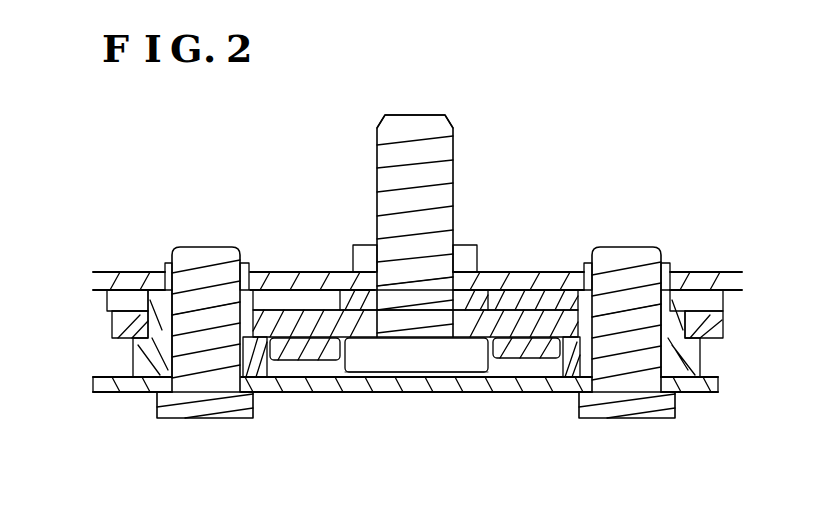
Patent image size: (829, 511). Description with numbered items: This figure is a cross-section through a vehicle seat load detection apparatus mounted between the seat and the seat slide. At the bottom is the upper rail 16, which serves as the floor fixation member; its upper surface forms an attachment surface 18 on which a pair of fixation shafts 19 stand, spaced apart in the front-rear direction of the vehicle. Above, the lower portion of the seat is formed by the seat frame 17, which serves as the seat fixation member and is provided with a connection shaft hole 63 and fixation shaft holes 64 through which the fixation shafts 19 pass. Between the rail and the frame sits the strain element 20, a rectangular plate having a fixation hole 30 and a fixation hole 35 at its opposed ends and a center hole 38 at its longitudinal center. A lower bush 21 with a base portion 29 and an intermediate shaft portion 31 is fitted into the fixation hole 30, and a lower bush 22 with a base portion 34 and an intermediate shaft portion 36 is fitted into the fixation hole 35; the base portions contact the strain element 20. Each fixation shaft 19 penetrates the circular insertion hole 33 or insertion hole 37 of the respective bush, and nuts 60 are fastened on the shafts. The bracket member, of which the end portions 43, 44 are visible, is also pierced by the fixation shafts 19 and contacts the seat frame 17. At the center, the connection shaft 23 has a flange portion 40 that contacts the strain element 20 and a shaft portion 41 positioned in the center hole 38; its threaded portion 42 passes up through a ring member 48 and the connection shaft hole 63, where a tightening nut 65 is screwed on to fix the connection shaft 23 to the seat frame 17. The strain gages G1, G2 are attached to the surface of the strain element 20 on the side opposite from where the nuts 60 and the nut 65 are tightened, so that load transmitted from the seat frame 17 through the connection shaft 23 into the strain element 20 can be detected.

The upper rail 16 is at (100, 392).
The seat frame 17 is at (703, 272).
The attachment surface 18 is at (120, 377).
The fixation shaft 19 is at (208, 247).
The strain element 20 is at (722, 345).
The lower bush 21 is at (145, 392).
The lower bush 22 is at (570, 370).
The connection shaft 23 is at (400, 373).
The base portion 29 is at (253, 380).
The fixation hole 30 is at (243, 326).
The intermediate shaft portion 31 is at (130, 327).
The insertion hole 33 is at (190, 357).
The base portion 34 is at (688, 357).
The fixation hole 35 is at (593, 322).
The intermediate shaft portion 36 is at (722, 292).
The insertion hole 37 is at (612, 363).
The center hole 38 is at (370, 323).
The flange portion 40 is at (440, 353).
The shaft portion 41 is at (433, 177).
The threaded portion 42 is at (378, 153).
The end portion 43 is at (93, 272).
The end portion 44 is at (705, 317).
The ring member 48 is at (488, 290).
The nut 60 is at (165, 272).
The connection shaft hole 63 is at (450, 277).
The fixation shaft hole 64 is at (150, 290).
The tightening nut 65 is at (365, 245).
The strain gage G1 is at (317, 353).
The strain gage G2 is at (507, 357).